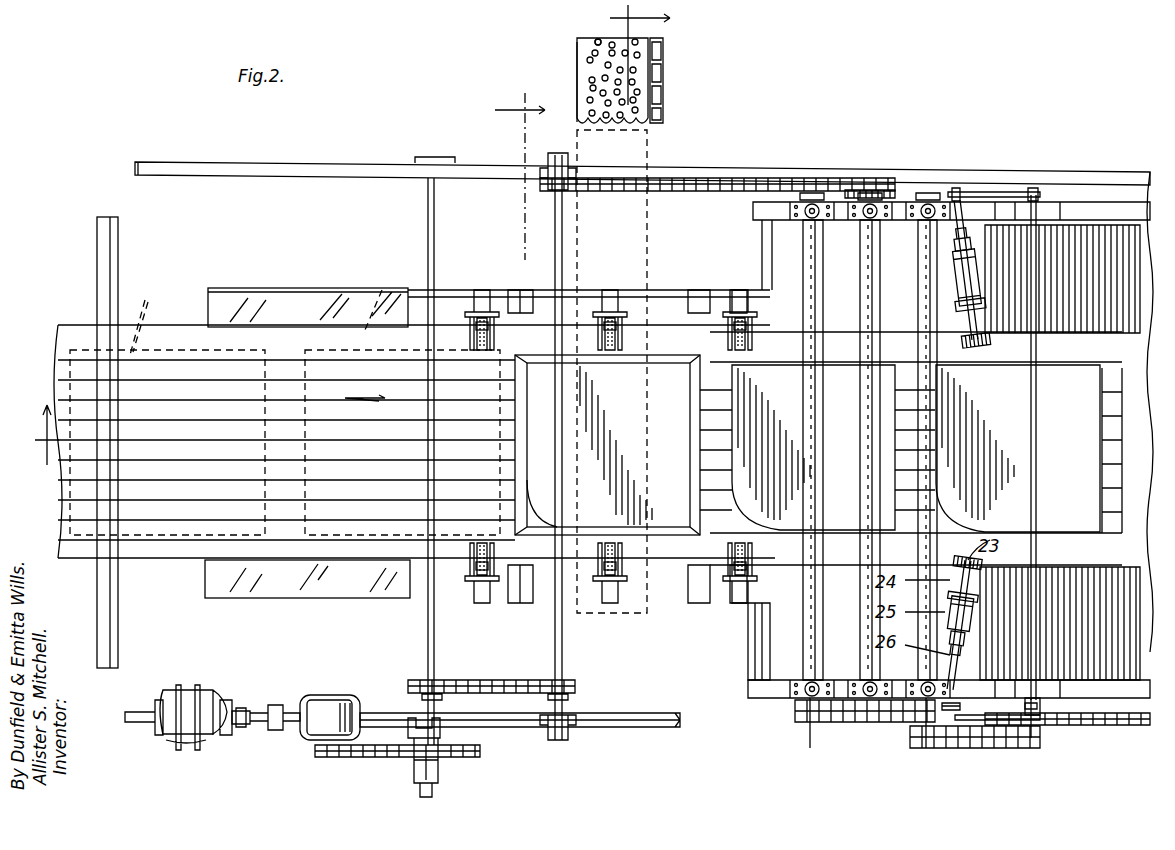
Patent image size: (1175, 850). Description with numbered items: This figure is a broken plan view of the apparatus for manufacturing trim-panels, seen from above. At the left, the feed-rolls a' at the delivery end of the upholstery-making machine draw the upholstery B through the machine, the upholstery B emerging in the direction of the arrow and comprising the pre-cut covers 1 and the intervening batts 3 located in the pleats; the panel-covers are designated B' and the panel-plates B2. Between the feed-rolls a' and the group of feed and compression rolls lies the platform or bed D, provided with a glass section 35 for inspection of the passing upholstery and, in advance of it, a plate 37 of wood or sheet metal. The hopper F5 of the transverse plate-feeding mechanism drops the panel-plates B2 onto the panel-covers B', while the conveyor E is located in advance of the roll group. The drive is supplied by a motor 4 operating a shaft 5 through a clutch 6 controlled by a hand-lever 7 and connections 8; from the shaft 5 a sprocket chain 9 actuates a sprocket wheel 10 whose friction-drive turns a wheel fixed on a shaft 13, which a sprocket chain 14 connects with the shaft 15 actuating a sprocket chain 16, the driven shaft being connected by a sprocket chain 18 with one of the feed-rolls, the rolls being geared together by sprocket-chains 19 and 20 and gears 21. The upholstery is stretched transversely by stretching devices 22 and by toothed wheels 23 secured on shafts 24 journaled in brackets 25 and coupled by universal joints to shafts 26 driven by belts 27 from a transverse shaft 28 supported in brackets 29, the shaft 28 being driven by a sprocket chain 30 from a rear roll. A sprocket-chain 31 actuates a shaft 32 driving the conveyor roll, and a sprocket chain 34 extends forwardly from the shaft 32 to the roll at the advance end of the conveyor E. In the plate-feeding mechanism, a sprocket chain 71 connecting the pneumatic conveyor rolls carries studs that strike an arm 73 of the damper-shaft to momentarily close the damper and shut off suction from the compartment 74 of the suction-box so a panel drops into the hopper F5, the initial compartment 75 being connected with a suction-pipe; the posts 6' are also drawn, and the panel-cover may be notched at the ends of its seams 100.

The pre-cut covers 1 is at (385, 280).
The batts 3 is at (43, 435).
The motor 4 is at (205, 692).
The shaft 5 is at (330, 705).
The clutch 6 is at (451, 380).
The hand-lever 7 is at (673, 87).
The sprocket chain 71 is at (663, 58).
The arm 73 is at (575, 56).
The compartment 74 is at (597, 40).
The initial compartment 75 is at (627, 371).
The connections 8 is at (520, 742).
The sprocket chain 9 is at (372, 750).
The sprocket wheel 10 is at (517, 173).
The shaft 13 is at (426, 624).
The sprocket chain 14 is at (470, 678).
The shaft 15 is at (566, 644).
The sprocket chain 16 is at (708, 180).
The sprocket chain 18 is at (890, 190).
The sprocket-chain 19 is at (762, 704).
The sprocket-chain 20 is at (850, 724).
The gears 21 is at (786, 200).
The stretching devices 22 is at (740, 598).
The toothed wheels 23 is at (972, 352).
The shafts 24 is at (955, 285).
The brackets 25 is at (972, 295).
The shafts 26 is at (960, 222).
The belts 27 is at (995, 190).
The transverse shaft 28 is at (1036, 460).
The brackets 29 is at (1038, 207).
The sprocket chain 30 is at (1012, 740).
The sprocket-chain 31 is at (935, 750).
The shaft 32 is at (982, 718).
The sprocket chain 34 is at (1060, 726).
The glass section 35 is at (305, 600).
The plate 37 is at (668, 300).
The seams 100 is at (180, 500).
The feed-rolls a' is at (80, 442).
The upholstery B is at (301, 293).
The panel-covers B' is at (281, 340).
The panel-plates B2 is at (855, 448).
The platform or bed D is at (400, 310).
The conveyor E is at (1122, 748).
The hopper F5 is at (520, 450).
The vertical post 6' is at (870, 450).